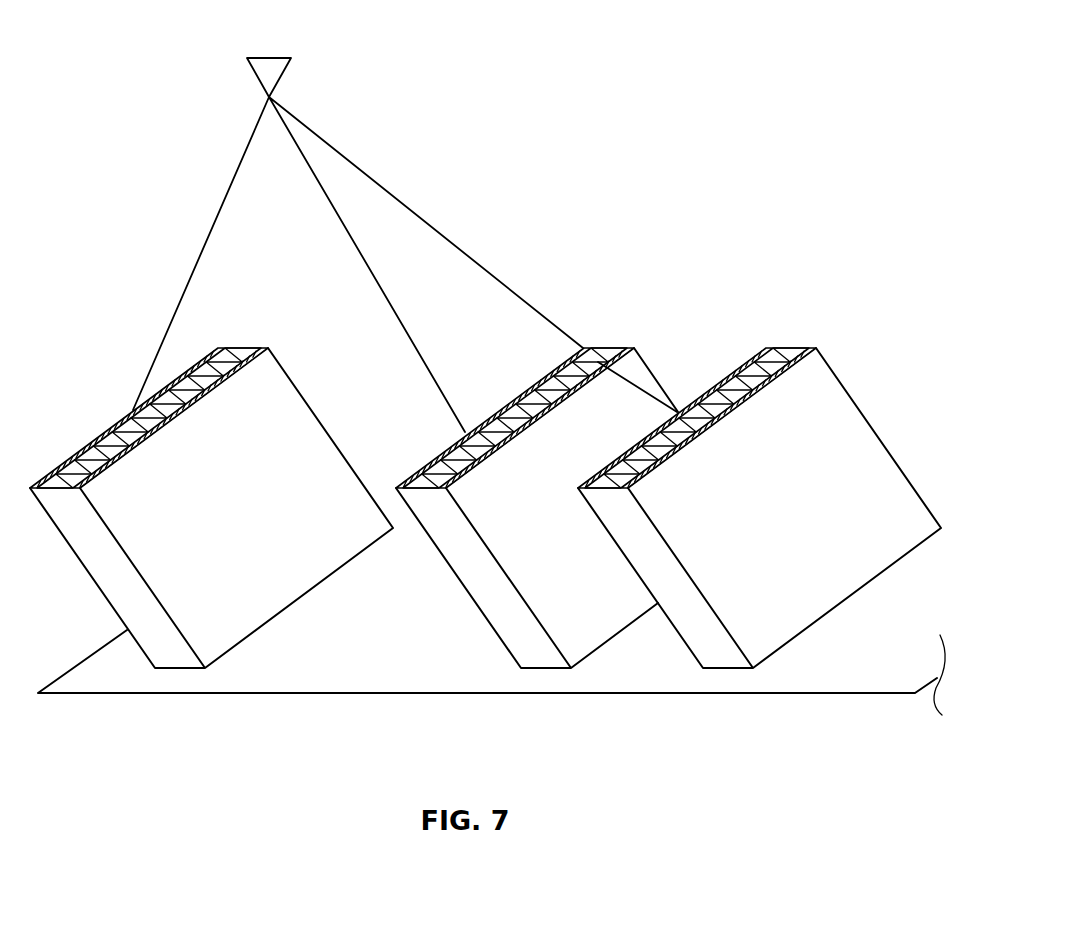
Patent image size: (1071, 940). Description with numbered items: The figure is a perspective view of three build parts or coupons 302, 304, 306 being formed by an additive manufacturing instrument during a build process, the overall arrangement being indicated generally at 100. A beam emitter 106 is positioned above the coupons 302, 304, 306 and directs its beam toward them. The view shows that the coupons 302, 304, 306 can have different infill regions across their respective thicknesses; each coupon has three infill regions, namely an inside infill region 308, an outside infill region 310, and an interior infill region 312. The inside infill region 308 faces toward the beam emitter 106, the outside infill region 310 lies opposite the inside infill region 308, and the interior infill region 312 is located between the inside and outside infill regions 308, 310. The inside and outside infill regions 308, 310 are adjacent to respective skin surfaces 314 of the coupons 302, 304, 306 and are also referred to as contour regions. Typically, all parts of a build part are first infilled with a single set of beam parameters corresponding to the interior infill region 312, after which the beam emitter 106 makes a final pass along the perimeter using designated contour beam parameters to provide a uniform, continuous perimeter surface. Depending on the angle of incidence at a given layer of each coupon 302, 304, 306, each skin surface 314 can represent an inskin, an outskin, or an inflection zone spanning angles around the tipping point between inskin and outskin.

The sensor system 100 is at (146, 96).
The beam emitter 106 is at (287, 71).
The coupon 302 is at (117, 578).
The coupon 304 is at (465, 560).
The coupon 306 is at (698, 638).
The inside infill region 308 is at (243, 348).
The outside infill region 310 is at (79, 457).
The interior infill region 312 is at (143, 418).
The skin surface 314 is at (308, 430).